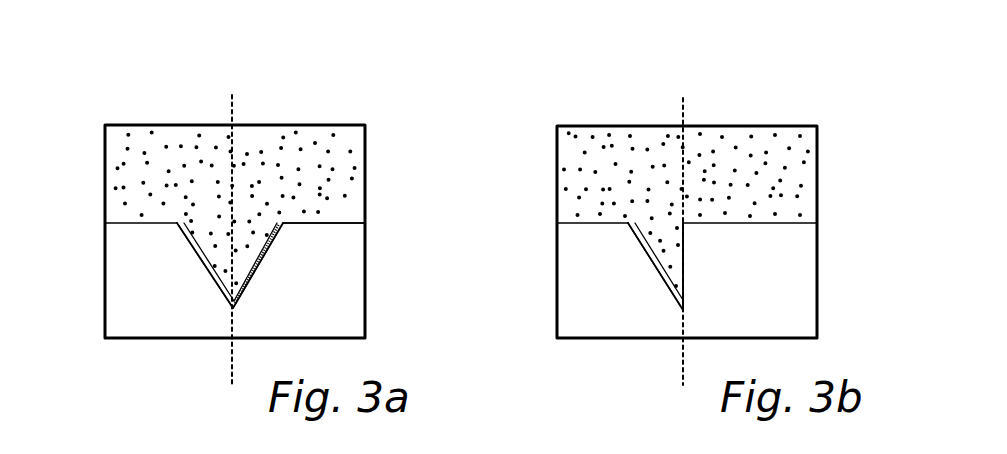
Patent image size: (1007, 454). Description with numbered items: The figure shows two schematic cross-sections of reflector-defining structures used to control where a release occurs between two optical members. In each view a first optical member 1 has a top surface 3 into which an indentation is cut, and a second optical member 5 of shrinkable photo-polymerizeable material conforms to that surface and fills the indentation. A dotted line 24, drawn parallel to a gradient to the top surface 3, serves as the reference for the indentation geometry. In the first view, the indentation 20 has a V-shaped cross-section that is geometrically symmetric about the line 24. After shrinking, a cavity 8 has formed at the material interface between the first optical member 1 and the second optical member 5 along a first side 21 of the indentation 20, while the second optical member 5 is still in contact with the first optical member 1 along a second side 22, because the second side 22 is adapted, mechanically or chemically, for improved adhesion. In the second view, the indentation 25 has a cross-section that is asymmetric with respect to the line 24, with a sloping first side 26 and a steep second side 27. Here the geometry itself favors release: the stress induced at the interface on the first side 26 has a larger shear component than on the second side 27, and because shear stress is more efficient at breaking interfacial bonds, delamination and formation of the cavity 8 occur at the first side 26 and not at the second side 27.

In FIG. 3A, the first optical member 1 is at (128, 295).
In FIG. 3B, the first optical member 1 is at (583, 288).
In FIG. 3A, the top surface 3 is at (332, 222).
In FIG. 3A, the second optical member 5 is at (127, 175).
In FIG. 3B, the second optical member 5 is at (577, 162).
In FIG. 3A, the cavity 8 is at (193, 250).
In FIG. 3B, the cavity 8 is at (640, 242).
In FIG. 3A, the indentation 20 is at (239, 272).
In FIG. 3A, the first side 21 is at (203, 267).
In FIG. 3A, the second side 22 is at (258, 272).
In FIG. 3A, the line 24 is at (231, 109).
In FIG. 3B, the line 24 is at (687, 105).
In FIG. 3B, the indentation 25 is at (672, 246).
In FIG. 3B, the first side 26 is at (660, 278).
In FIG. 3B, the second side 27 is at (685, 255).